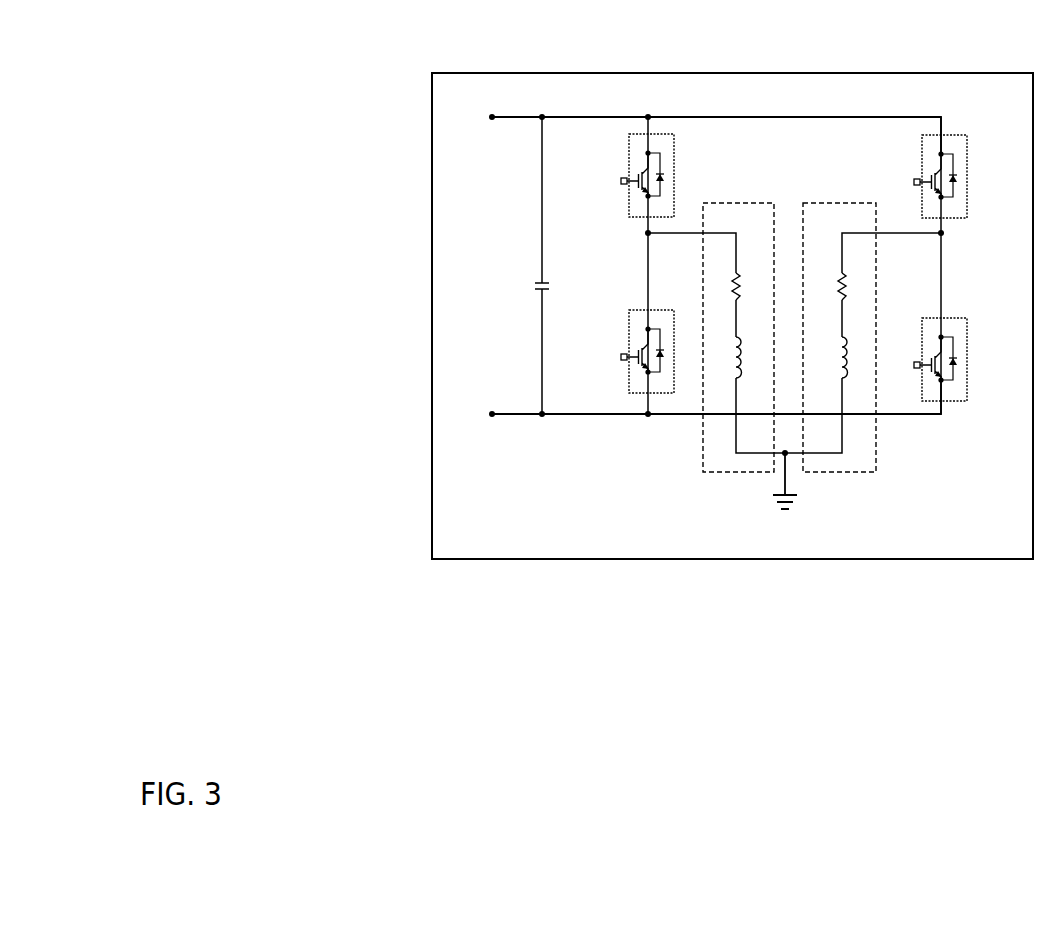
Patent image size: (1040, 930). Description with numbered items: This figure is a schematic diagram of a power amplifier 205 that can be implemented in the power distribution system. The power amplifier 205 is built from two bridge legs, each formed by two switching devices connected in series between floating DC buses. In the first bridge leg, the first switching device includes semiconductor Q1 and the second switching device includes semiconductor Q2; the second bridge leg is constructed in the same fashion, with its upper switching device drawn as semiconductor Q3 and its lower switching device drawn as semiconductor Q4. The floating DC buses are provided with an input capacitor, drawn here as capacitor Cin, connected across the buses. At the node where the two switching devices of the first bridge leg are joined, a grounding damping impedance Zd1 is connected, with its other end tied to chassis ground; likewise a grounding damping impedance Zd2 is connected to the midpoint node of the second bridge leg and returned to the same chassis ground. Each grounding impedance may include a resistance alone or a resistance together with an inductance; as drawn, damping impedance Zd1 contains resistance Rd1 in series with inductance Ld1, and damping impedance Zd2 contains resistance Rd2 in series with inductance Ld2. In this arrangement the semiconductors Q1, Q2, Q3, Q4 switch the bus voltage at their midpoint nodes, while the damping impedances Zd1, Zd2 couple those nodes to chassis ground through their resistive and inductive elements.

The power amplifier 205 is at (420, 92).
The semiconductor Q1 is at (640, 175).
The semiconductor Q2 is at (640, 351).
The transistor Q3 with gate drive 3 Q3 is at (933, 176).
The transistor Q4 with gate drive 4 Q4 is at (937, 358).
The input capacitor Cin is at (549, 265).
The damping impedance Zd1 is at (738, 337).
The damping impedance Zd2 is at (839, 337).
The damping resistor Rd1 is at (749, 286).
The damping resistor Rd2 is at (854, 286).
The damping inductor Ld1 is at (750, 357).
The damping inductor Ld2 is at (856, 357).